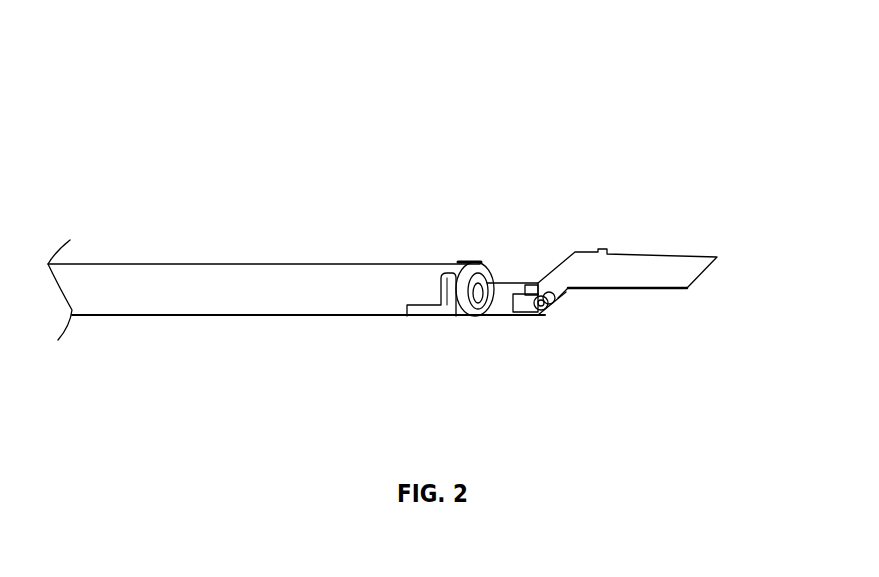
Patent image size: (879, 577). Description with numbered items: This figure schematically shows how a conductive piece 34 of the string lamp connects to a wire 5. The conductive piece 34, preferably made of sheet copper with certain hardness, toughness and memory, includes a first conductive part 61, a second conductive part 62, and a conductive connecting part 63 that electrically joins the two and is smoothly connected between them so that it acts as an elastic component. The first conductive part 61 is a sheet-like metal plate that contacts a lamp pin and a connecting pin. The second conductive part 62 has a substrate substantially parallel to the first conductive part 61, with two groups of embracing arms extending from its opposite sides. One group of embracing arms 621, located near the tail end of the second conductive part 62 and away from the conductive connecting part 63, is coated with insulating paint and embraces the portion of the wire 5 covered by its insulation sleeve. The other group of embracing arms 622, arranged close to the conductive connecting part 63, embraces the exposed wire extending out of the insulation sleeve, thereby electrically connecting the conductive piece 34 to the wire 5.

The wire 5 is at (218, 263).
The conductive piece 34 is at (662, 110).
The first conductive part 61 is at (658, 272).
The second conductive part 62 is at (438, 318).
The group of embracing arms 621 is at (467, 260).
The group of embracing arms 622 is at (514, 280).
The conductive connecting part 63 is at (557, 302).